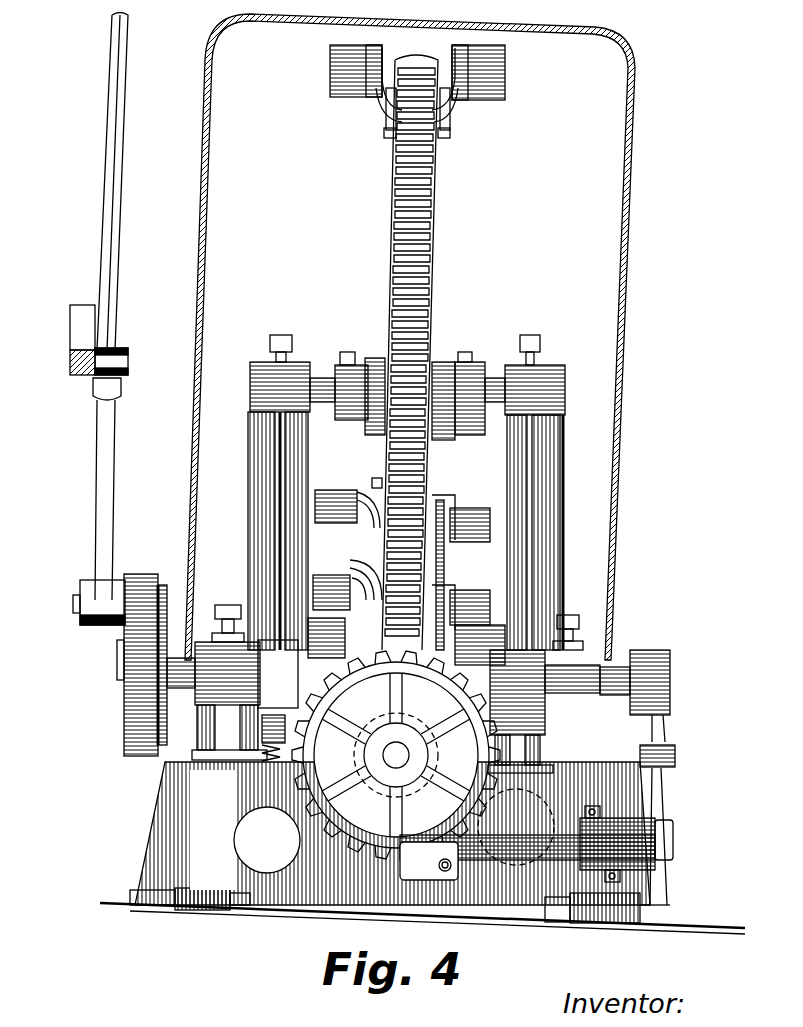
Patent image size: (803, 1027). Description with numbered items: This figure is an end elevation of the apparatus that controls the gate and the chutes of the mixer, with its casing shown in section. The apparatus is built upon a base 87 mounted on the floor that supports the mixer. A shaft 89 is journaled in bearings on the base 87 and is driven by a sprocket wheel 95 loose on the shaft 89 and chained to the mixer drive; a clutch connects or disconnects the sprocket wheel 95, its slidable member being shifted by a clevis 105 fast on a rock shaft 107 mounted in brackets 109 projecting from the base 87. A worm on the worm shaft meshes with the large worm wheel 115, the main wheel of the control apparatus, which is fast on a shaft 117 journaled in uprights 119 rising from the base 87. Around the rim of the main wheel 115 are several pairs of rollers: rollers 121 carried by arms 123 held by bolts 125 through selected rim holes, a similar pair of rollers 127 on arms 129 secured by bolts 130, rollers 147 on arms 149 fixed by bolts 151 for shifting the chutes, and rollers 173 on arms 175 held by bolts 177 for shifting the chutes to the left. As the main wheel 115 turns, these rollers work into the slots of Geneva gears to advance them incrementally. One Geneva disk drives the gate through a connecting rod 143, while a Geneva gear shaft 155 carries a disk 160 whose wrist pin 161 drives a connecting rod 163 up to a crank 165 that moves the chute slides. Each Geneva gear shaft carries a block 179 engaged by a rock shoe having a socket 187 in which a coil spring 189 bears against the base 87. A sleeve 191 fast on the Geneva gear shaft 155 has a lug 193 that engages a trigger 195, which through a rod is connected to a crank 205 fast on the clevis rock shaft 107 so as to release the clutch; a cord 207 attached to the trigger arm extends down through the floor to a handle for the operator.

The base 87 is at (166, 798).
The shaft 89 is at (396, 755).
The sprocket wheel 95 is at (488, 812).
The clevis 105 is at (450, 862).
The rock shaft 107 is at (530, 862).
The brackets 109 is at (606, 828).
The worm wheel 115 is at (437, 261).
The shaft 117 is at (488, 376).
The uprights 119 is at (250, 473).
The rollers 121 is at (370, 524).
The arms 123 is at (382, 492).
The bolts 125 is at (372, 482).
The rollers 127 is at (329, 60).
The arms 129 is at (380, 100).
The bolts 130 is at (378, 120).
The connecting rod 143 is at (104, 219).
The rollers 147 is at (506, 68).
The arms 149 is at (458, 112).
The bolts 151 is at (450, 134).
The Geneva gear shaft 155 is at (221, 605).
The disk 160 is at (124, 717).
The wrist pin 161 is at (79, 604).
The connecting rod 163 is at (96, 497).
The crank 165 is at (70, 327).
The rollers 173 is at (470, 590).
The arms 175 is at (456, 502).
The bolts 177 is at (446, 492).
The block 179 is at (282, 645).
The socket 187 is at (273, 714).
The coil spring 189 is at (262, 785).
The sleeve 191 is at (656, 656).
The lug 193 is at (668, 725).
The trigger 195 is at (675, 747).
The crank 205 is at (666, 800).
The cord 207 is at (664, 900).